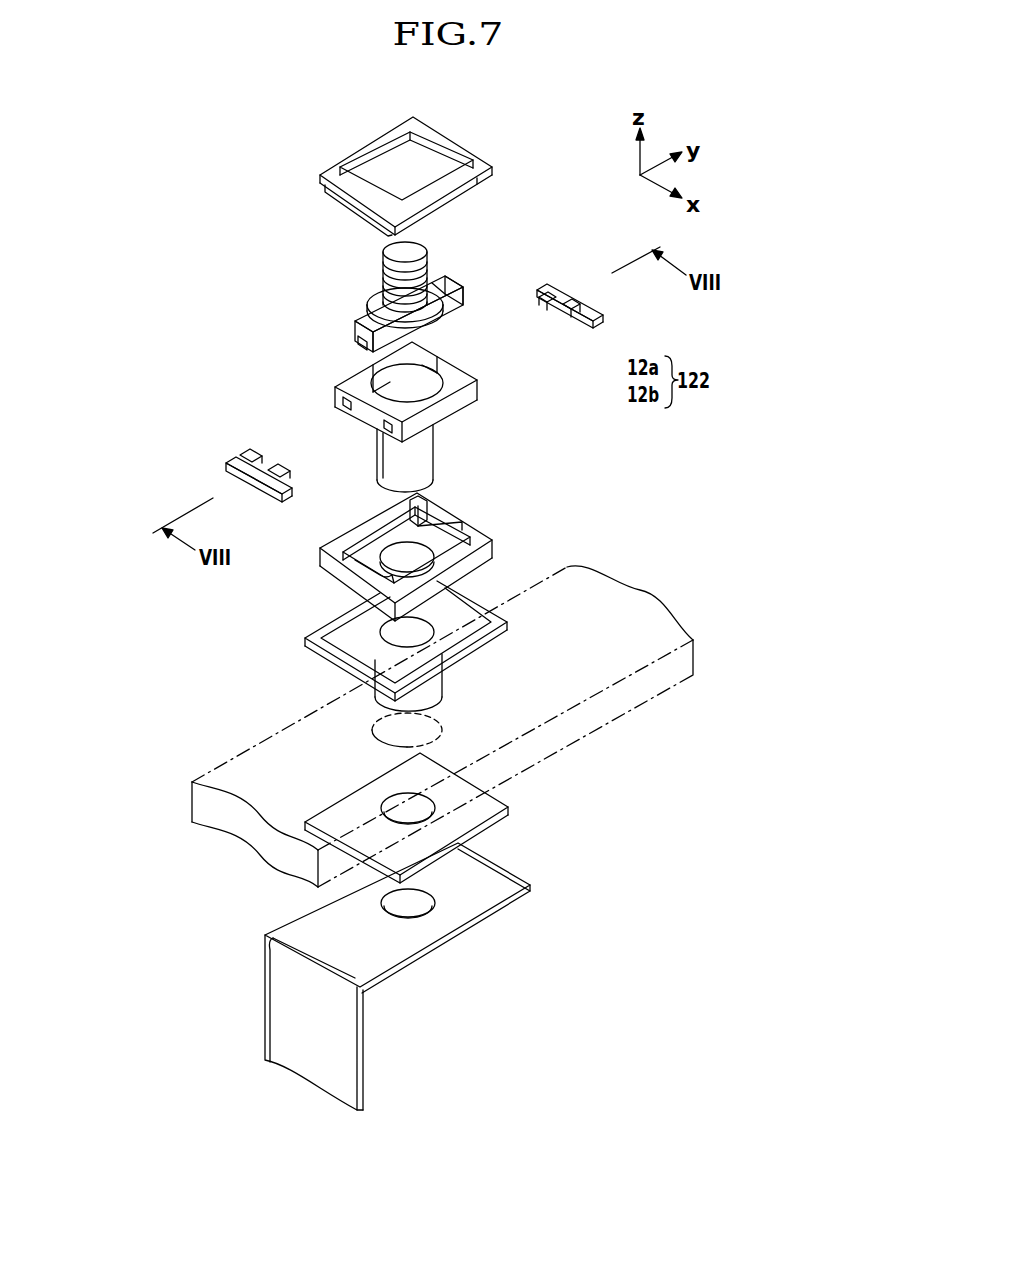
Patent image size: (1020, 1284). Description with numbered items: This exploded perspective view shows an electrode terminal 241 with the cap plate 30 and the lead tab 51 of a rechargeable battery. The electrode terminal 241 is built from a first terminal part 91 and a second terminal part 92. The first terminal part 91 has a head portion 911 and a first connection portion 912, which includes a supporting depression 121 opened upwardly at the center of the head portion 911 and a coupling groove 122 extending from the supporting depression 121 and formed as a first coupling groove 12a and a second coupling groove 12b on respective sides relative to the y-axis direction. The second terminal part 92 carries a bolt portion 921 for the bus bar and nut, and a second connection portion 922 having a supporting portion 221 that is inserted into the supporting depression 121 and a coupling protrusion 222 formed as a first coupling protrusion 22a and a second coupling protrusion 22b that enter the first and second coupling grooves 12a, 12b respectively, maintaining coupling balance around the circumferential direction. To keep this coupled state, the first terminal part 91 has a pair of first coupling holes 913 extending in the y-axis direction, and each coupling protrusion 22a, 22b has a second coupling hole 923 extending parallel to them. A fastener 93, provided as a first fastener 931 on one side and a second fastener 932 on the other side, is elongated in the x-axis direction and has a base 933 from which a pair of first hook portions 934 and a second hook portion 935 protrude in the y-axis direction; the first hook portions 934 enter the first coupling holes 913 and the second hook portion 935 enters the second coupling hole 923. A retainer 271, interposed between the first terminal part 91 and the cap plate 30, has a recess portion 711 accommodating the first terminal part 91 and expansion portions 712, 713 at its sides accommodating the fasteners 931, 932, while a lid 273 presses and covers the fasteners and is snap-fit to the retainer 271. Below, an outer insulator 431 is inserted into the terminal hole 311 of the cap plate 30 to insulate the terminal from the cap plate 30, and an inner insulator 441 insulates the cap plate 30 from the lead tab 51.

The electrode terminal 241 is at (290, 121).
The lid 273 is at (466, 137).
The second terminal part 92 is at (368, 290).
The bolt portion 921 is at (385, 262).
The second connection portion 922 is at (368, 309).
The supporting portion 221 is at (380, 292).
The coupling protrusion 222 is at (350, 318).
The first coupling protrusion 22a is at (292, 334).
The second coupling protrusion 22b is at (455, 288).
The second coupling hole 923 is at (356, 343).
The first terminal part 91 is at (385, 407).
The head portion 911 is at (453, 382).
The first connection portion 912 is at (329, 383).
The supporting depression 121 is at (380, 382).
The coupling groove 122 is at (362, 412).
The first coupling groove 12a is at (353, 420).
The second coupling groove 12b is at (432, 366).
The first coupling hole 913 is at (382, 428).
The fastener 93 is at (363, 387).
The first fastener 931 is at (204, 472).
The second fastener 932 is at (564, 274).
The base 933 is at (245, 478).
The first hook portion 934 is at (286, 478).
The second hook portion 935 is at (252, 456).
The retainer 271 is at (400, 537).
The recess portion 711 is at (440, 513).
The expansion portion 712 is at (382, 565).
The expansion portion 713 is at (462, 522).
The outer insulator 431 is at (322, 645).
The terminal hole 311 is at (375, 725).
The cap plate 30 is at (450, 726).
The inner insulator 441 is at (510, 808).
The lead tab 51 is at (470, 903).